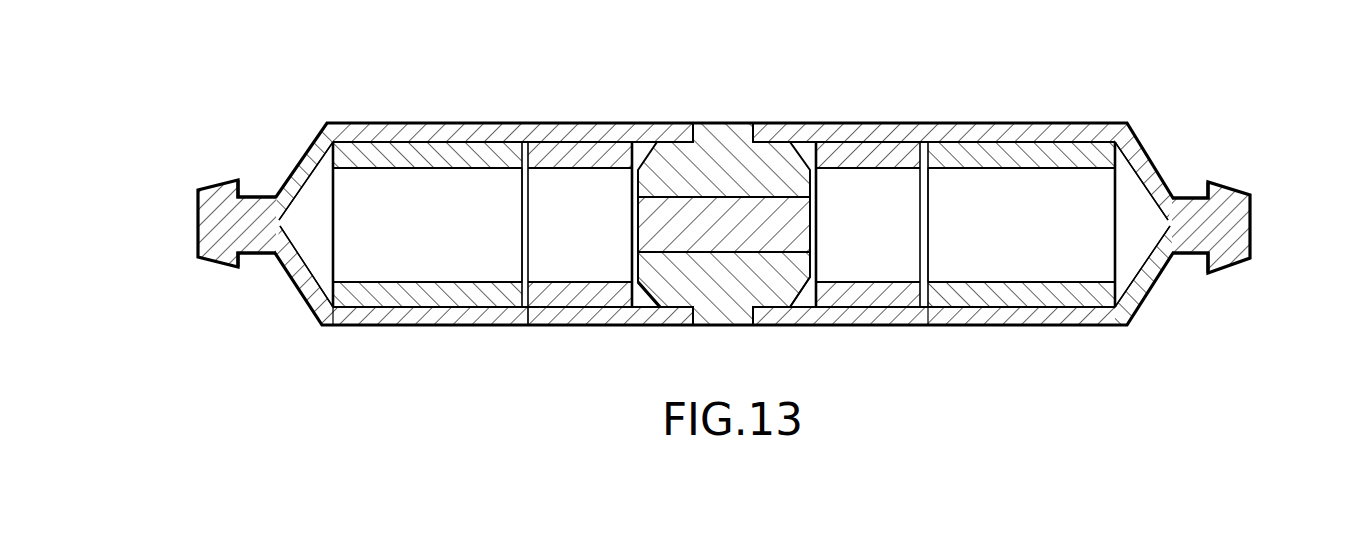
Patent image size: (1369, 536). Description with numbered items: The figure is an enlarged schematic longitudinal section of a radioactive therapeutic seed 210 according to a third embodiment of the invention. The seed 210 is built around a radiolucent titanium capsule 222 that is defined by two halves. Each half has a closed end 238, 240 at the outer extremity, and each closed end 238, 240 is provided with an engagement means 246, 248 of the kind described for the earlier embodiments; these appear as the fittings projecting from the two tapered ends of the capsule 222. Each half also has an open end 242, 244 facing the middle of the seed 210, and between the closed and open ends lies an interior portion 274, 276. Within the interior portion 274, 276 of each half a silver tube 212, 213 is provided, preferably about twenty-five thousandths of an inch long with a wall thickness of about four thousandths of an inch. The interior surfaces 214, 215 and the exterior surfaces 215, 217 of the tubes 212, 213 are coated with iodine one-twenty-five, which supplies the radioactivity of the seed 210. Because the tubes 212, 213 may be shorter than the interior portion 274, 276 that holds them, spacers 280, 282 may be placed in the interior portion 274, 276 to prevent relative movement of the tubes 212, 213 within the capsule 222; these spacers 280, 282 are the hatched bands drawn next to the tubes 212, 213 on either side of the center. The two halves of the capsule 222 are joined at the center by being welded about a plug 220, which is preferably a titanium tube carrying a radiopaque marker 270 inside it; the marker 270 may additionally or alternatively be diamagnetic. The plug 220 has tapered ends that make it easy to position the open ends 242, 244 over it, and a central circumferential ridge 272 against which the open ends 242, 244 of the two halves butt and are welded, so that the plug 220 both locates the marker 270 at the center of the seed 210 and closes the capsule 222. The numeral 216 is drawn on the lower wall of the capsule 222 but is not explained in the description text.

The therapeutic seed 210 is at (847, 85).
The silver tube 212 is at (462, 295).
The silver tube 213 is at (1057, 298).
The interior surface 214 is at (427, 278).
The interior surface 215 is at (1018, 278).
The housing tube 216 is at (386, 312).
The exterior surface 217 is at (1000, 308).
The plug 220 is at (790, 272).
The titanium capsule 222 is at (553, 133).
The closed end 238 is at (302, 163).
The closed end 240 is at (1157, 163).
The open end 242 is at (615, 327).
The open end 244 is at (833, 323).
The engagement means 246 is at (223, 218).
The engagement means 248 is at (1225, 223).
The radiopaque marker 270 is at (735, 222).
The central circumferential ridge 272 is at (718, 310).
The interior portion 274 is at (318, 185).
The interior portion 276 is at (1128, 193).
The spacer 280 is at (553, 295).
The spacer 282 is at (882, 297).